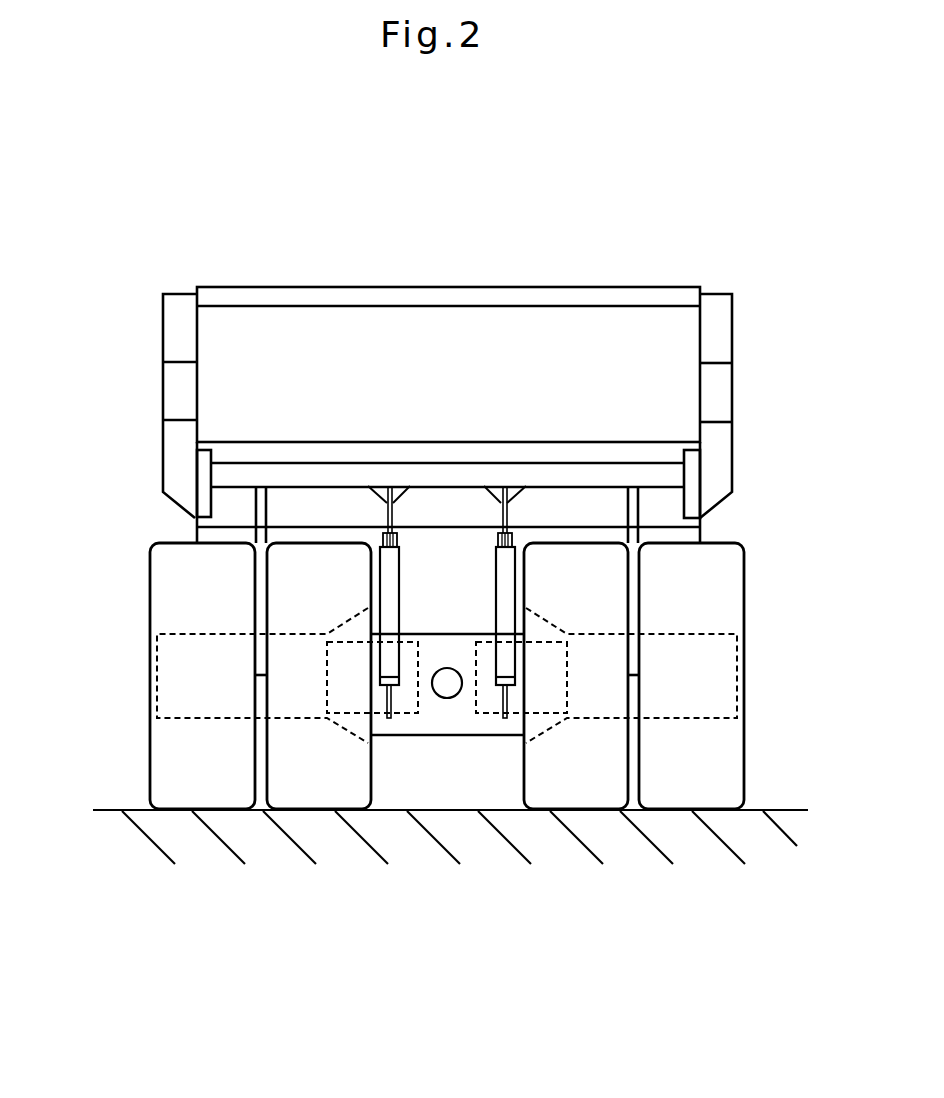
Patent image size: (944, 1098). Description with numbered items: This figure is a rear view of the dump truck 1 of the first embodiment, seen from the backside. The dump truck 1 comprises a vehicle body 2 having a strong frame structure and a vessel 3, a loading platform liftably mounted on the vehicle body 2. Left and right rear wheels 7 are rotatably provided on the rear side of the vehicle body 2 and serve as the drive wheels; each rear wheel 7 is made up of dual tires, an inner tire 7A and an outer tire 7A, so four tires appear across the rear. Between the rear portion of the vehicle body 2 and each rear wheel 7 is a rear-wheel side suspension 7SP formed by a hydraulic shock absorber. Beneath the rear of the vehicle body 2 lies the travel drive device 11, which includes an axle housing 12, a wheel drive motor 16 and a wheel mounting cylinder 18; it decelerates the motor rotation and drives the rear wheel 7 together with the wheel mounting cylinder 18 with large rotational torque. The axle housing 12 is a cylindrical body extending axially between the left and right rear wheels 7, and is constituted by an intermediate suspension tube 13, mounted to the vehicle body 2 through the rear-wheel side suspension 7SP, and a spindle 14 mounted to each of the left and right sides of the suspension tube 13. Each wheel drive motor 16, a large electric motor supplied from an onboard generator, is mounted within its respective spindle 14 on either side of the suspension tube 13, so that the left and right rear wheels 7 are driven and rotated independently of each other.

The dump truck 1 is at (442, 272).
The vehicle body 2 is at (440, 568).
The vessel 3 is at (527, 365).
The rear wheel 7 is at (146, 544).
The tire 7A is at (322, 548).
The rear-wheel side suspension 7SP is at (390, 582).
The travel drive device 11 is at (142, 670).
The axle housing 12 is at (457, 748).
The suspension tube 13 is at (426, 737).
The spindle 14 is at (347, 733).
The wheel drive motor 16 is at (407, 713).
The wheel mounting cylinder 18 is at (190, 720).